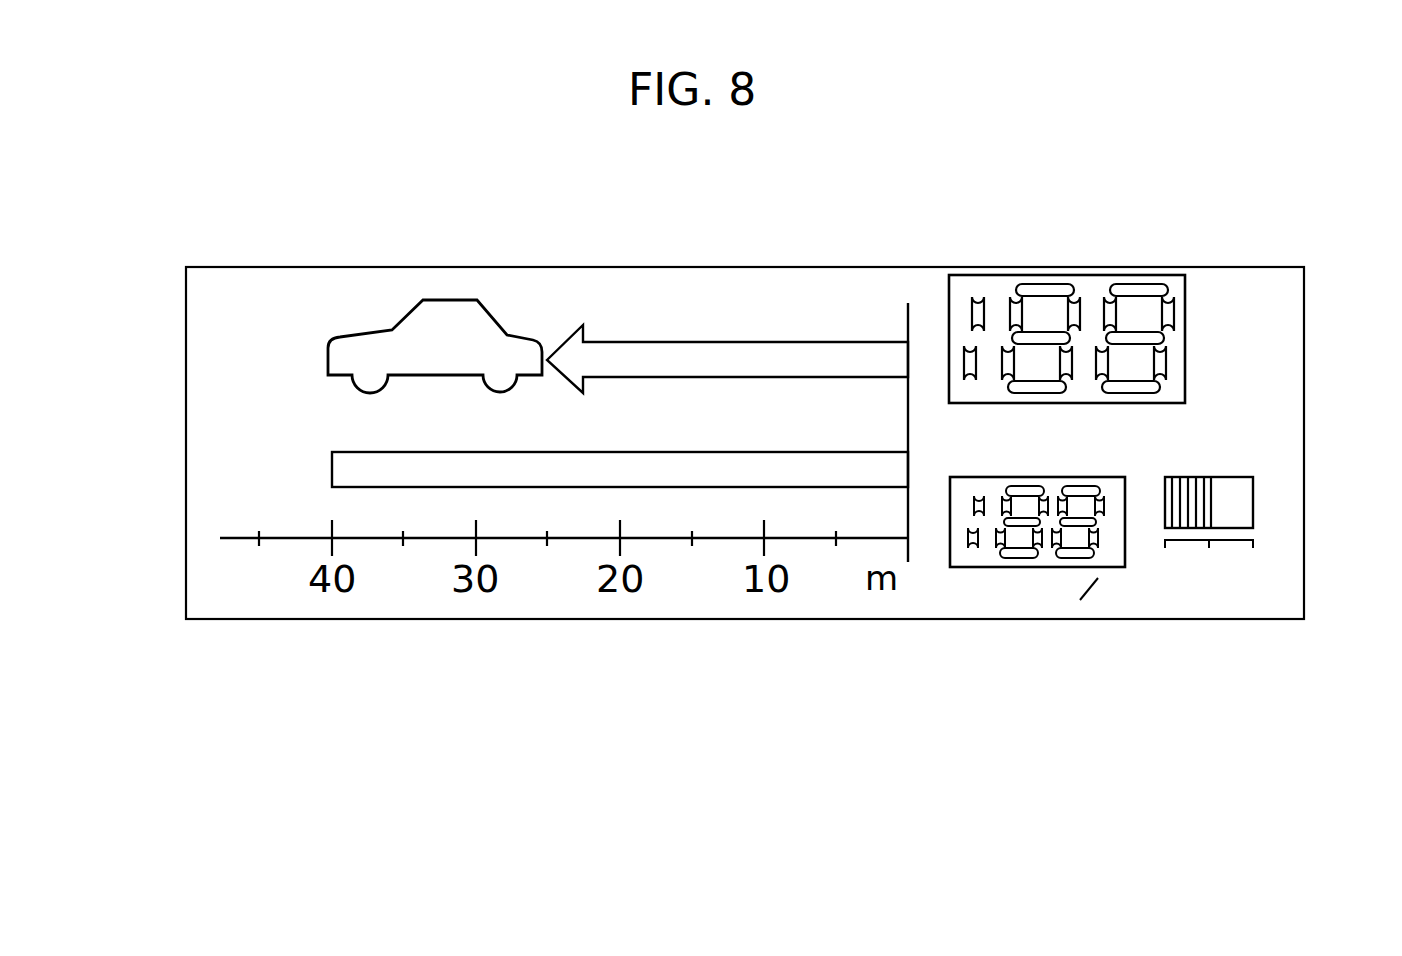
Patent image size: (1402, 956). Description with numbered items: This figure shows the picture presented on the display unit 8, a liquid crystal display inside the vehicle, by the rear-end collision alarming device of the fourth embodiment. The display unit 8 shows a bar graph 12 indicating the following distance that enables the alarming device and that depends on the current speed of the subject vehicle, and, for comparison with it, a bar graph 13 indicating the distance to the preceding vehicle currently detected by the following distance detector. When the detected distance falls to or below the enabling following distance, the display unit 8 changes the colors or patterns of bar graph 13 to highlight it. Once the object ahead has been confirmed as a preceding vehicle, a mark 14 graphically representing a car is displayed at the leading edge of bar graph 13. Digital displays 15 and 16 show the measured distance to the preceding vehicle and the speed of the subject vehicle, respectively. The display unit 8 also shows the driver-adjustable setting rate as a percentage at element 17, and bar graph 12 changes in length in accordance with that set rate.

The display unit 8 is at (1306, 356).
The bar graph 12 is at (332, 478).
The bar graph 13 is at (662, 363).
The mark 14 is at (442, 300).
The digital display 15 is at (1092, 285).
The digital display 16 is at (947, 565).
The setting rate display 17 is at (1254, 500).